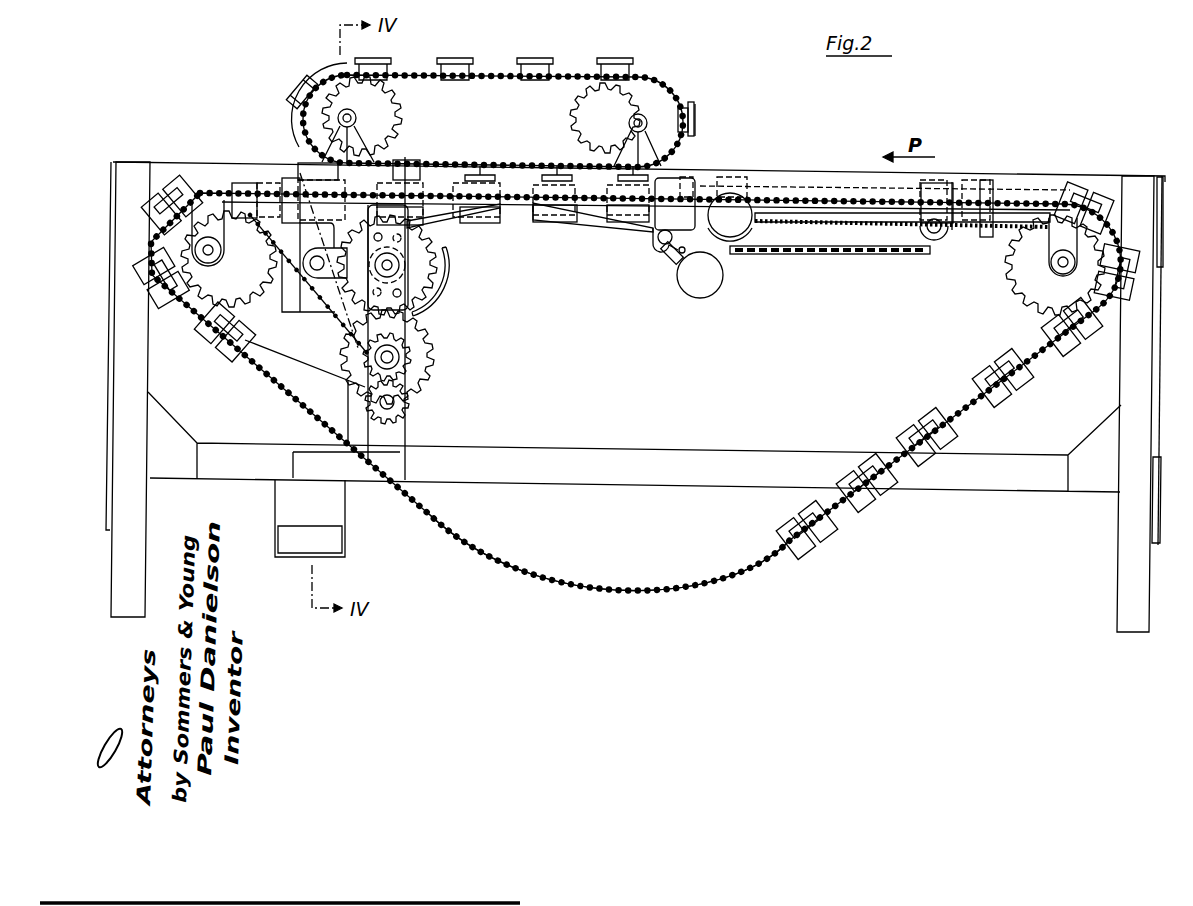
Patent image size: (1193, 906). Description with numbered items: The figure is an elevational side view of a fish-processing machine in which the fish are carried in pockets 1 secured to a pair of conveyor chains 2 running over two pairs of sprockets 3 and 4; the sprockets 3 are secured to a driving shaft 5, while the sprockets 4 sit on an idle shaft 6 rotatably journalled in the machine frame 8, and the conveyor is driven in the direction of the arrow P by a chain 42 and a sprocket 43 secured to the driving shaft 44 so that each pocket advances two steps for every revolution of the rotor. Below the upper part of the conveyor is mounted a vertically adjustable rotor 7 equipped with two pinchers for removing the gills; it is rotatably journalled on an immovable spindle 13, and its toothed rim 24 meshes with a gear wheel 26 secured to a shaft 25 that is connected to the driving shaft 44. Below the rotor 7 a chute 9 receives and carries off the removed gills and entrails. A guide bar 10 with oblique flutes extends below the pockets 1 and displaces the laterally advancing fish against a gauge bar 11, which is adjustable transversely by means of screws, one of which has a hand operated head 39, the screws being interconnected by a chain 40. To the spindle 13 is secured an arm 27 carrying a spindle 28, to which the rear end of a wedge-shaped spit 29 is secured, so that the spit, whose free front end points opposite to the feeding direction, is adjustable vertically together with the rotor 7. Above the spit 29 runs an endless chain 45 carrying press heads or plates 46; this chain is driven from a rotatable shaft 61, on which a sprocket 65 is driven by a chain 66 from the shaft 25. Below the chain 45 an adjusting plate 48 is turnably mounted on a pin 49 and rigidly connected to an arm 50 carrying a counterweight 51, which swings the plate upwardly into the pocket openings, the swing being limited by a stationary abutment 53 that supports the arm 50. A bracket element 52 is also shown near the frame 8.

The pockets 1 is at (822, 550).
The conveyor chains 2 is at (637, 588).
The sprockets 3 is at (235, 288).
The sprockets 4 is at (1010, 270).
The driving shaft 5 is at (212, 252).
The idle shaft 6 is at (1063, 265).
The rotor 7 is at (417, 278).
The machine frame 8 is at (1140, 192).
The chute 9 is at (435, 312).
The guide bar 10 is at (877, 222).
The gauge bar 11 is at (801, 195).
The spindle 13 is at (380, 263).
The toothed rim 24 is at (436, 267).
The shaft 25 is at (390, 357).
The gear wheel 26 is at (432, 343).
The arm 27 is at (324, 307).
The spindle 28 is at (314, 270).
The wedge-shaped spit 29 is at (443, 220).
The hand operated head 39 is at (730, 193).
The chain 40 is at (818, 257).
The chain 42 is at (315, 385).
The sprocket 43 is at (407, 400).
The driving shaft 44 is at (405, 412).
The endless chain 45 is at (575, 77).
The press heads or plates 46 is at (613, 64).
The adjusting plate 48 is at (597, 223).
The pin 49 is at (657, 239).
The arm 50 is at (686, 247).
The counterweight 51 is at (710, 277).
The bracket 52 is at (1092, 177).
The stationary abutment 53 is at (664, 259).
The rotatable shaft 61 is at (349, 111).
The sprocket 65 is at (295, 130).
The chain 66 is at (405, 152).